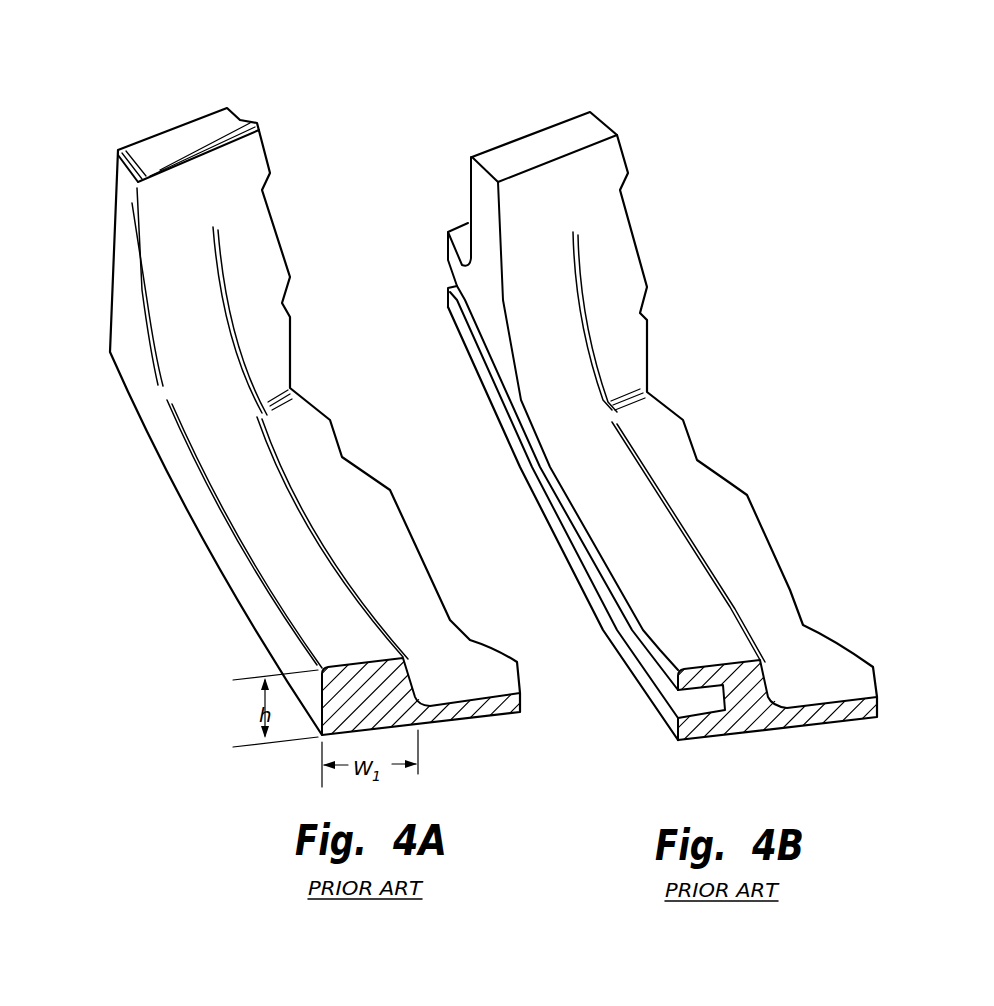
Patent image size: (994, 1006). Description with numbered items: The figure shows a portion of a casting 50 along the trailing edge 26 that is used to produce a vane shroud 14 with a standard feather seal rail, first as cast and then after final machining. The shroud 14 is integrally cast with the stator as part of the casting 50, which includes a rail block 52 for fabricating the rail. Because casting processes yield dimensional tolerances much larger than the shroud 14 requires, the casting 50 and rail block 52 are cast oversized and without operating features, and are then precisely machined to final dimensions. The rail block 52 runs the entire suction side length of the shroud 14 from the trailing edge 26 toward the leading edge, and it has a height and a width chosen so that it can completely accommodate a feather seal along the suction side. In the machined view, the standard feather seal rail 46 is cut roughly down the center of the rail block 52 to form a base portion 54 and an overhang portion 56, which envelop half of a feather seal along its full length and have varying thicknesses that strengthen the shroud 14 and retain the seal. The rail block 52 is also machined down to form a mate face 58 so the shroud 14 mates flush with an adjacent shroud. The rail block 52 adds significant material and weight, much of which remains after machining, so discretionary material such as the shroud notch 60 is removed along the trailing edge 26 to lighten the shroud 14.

In FIG. 4A, the vane shroud 14 is at (460, 687).
In FIG. 4B, the vane shroud 14 is at (769, 710).
In FIG. 4A, the trailing edge 26 is at (310, 435).
In FIG. 4B, the standard feather seal rail 46 is at (678, 707).
In FIG. 4A, the casting 50 is at (348, 435).
In FIG. 4B, the casting 50 is at (692, 409).
In FIG. 4A, the rail block 52 is at (280, 552).
In FIG. 4B, the rail block 52 is at (737, 538).
In FIG. 4B, the base portion 54 is at (567, 537).
In FIG. 4B, the overhang portion 56 is at (611, 484).
In FIG. 4B, the mate face 58 is at (612, 628).
In FIG. 4B, the shroud notch 60 is at (458, 217).